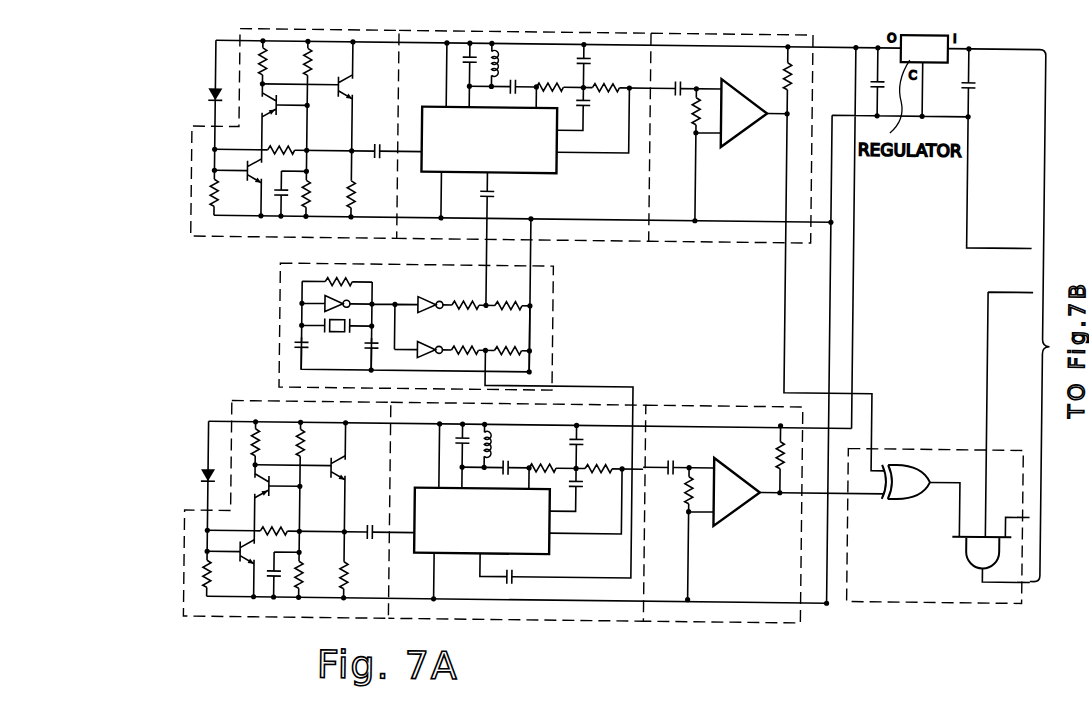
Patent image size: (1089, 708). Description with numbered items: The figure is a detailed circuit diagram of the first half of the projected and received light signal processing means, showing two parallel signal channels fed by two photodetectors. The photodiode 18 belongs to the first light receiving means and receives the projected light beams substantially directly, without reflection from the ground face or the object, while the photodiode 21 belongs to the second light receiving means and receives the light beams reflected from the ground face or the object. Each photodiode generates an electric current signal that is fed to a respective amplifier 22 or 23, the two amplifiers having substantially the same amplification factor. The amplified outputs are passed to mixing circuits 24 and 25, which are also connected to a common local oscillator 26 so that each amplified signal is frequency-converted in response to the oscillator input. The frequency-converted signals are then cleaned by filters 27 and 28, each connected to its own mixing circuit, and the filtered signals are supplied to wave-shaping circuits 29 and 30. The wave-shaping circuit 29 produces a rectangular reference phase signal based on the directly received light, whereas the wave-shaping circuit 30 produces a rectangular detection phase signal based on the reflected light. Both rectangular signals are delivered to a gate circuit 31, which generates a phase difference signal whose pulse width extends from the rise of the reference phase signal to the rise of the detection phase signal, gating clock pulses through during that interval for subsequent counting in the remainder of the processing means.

The photodiode 18 is at (202, 99).
The photodiode 21 is at (205, 490).
The amplifier 22 is at (225, 231).
The amplifier 23 is at (216, 622).
The mixing circuit 24 is at (523, 201).
The mixing circuit 25 is at (517, 528).
The local oscillator 26 is at (548, 331).
The filter 27 is at (578, 232).
The filter 28 is at (571, 621).
The wave-shaping circuit 29 is at (743, 232).
The wave-shaping circuit 30 is at (737, 616).
The gate circuit 31 is at (924, 596).